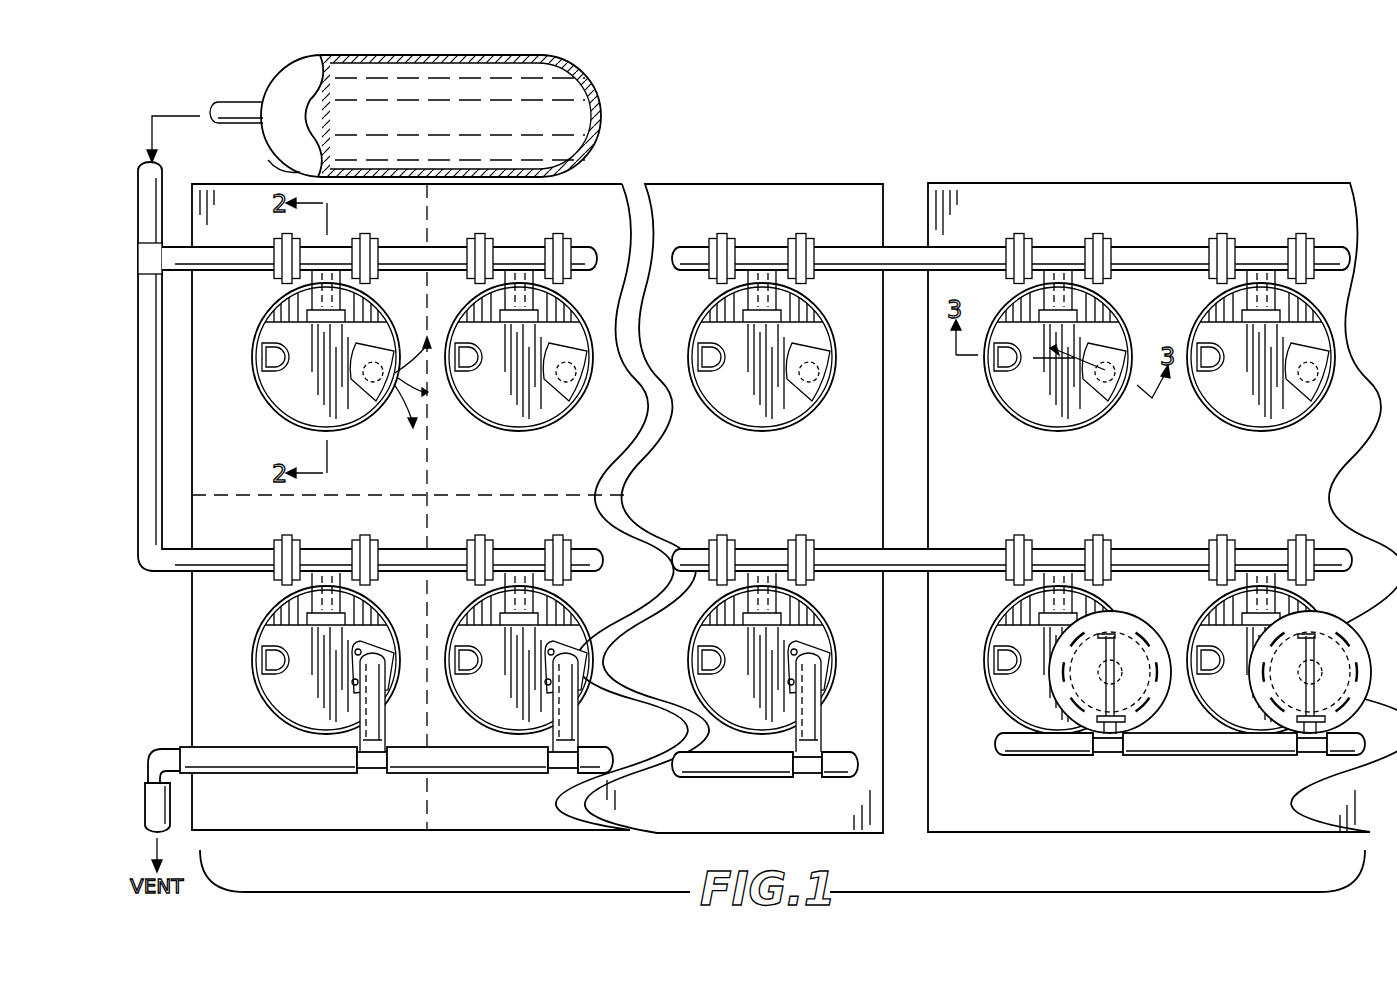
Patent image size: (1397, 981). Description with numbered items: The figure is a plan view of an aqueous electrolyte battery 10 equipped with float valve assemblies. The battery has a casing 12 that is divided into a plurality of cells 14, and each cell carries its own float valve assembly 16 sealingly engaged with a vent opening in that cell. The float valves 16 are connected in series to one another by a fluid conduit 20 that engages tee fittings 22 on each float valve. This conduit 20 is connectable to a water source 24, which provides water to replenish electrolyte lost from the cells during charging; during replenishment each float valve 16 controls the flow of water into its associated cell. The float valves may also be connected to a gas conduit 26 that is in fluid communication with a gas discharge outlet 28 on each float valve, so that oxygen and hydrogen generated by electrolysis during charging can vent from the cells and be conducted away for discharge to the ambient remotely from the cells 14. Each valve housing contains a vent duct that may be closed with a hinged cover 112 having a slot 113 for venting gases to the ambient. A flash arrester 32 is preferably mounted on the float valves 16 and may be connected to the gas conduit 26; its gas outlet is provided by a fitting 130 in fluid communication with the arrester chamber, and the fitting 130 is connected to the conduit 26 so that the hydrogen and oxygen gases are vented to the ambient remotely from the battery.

The aqueous electrolyte battery 10 is at (829, 160).
The casing 12 is at (598, 184).
The cells 14 is at (245, 213).
The float valve assembly 16 is at (298, 393).
The fluid conduit 20 is at (443, 257).
The tee fittings 22 is at (335, 257).
The water source 24 is at (452, 152).
The gas conduit 26 is at (462, 760).
The gas discharge outlet 28 is at (365, 660).
The flash arrester 32 is at (1273, 712).
The hinged cover 112 is at (380, 378).
The slot 113 is at (580, 397).
The fitting 130 is at (1194, 694).